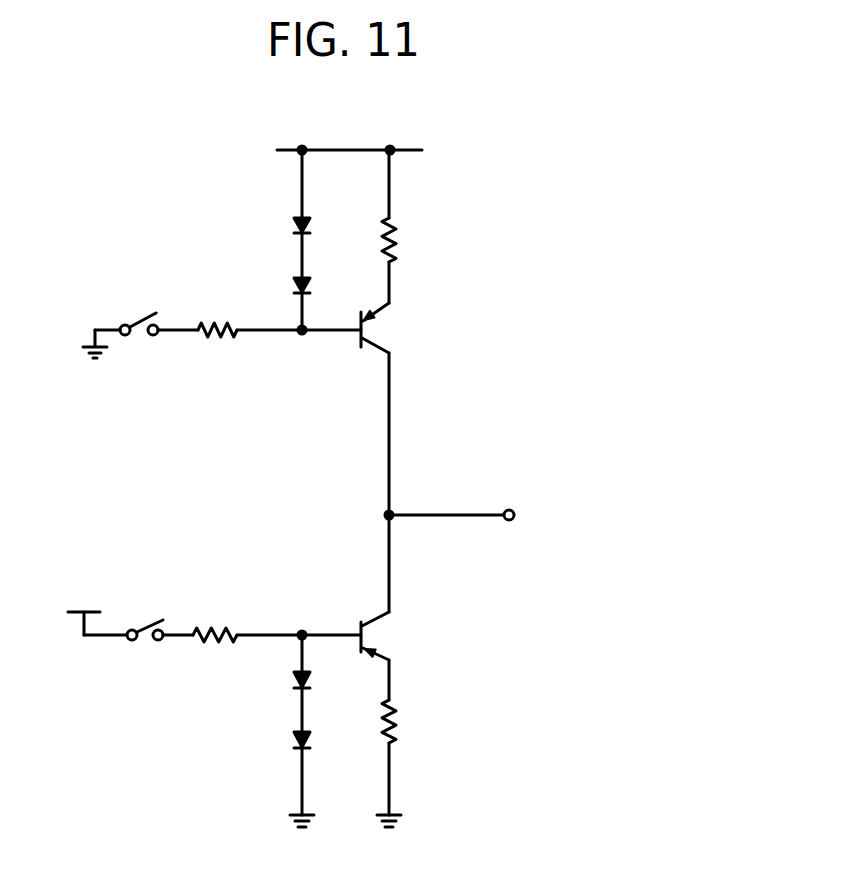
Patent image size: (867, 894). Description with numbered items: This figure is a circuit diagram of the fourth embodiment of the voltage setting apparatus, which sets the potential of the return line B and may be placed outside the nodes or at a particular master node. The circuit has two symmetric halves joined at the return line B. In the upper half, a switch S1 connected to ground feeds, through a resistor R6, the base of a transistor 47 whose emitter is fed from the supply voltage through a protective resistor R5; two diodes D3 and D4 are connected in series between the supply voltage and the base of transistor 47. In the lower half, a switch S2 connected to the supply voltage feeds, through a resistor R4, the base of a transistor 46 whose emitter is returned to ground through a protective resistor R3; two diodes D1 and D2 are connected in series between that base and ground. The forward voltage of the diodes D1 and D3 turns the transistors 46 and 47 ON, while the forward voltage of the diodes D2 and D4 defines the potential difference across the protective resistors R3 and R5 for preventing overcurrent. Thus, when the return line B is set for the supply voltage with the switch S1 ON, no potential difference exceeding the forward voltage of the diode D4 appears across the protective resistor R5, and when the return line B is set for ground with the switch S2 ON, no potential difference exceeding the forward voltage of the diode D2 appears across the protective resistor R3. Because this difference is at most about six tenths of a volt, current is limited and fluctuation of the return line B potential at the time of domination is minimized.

The transistor 46 is at (375, 643).
The transistor 47 is at (374, 331).
The protective resistor R3 is at (408, 737).
The resistor R4 is at (262, 616).
The protective resistor R5 is at (408, 226).
The resistor R6 is at (259, 312).
The diode D1 is at (321, 683).
The diode D2 is at (321, 743).
The diode D3 is at (321, 289).
The diode D4 is at (321, 231).
The switch S1 is at (123, 318).
The switch S2 is at (115, 612).